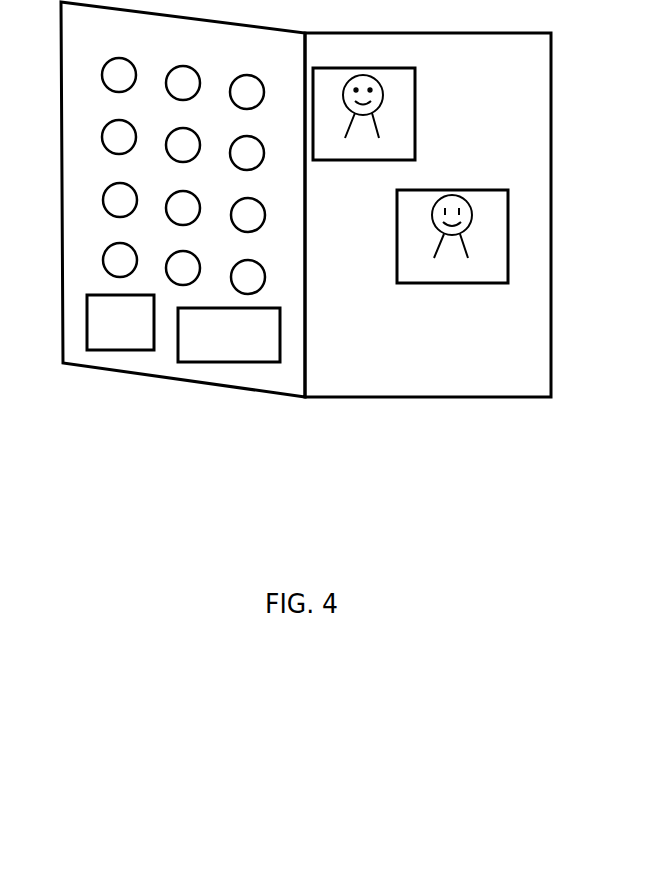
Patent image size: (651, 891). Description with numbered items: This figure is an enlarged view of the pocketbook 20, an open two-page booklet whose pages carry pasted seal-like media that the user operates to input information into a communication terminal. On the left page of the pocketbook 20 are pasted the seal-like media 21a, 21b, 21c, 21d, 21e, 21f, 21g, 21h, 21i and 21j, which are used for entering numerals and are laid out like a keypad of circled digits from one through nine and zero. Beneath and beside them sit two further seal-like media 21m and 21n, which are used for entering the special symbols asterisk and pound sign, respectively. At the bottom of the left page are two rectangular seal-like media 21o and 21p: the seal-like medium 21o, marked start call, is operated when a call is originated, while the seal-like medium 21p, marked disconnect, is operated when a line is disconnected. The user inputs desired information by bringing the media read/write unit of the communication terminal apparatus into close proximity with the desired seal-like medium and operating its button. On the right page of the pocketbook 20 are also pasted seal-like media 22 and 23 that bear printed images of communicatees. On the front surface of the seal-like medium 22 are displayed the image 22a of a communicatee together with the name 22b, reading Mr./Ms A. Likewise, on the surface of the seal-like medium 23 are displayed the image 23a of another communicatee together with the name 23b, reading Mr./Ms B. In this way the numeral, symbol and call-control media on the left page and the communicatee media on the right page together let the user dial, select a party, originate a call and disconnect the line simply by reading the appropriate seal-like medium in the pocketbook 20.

The pocketbook 20 is at (155, 413).
The seal-like medium for entering numerals 21a is at (131, 62).
The seal-like medium for entering numerals 21b is at (195, 70).
The seal-like medium for entering numerals 21c is at (259, 79).
The seal-like medium for entering numerals 21d is at (131, 124).
The seal-like medium for entering numerals 21e is at (202, 120).
The seal-like medium for entering numerals 21f is at (266, 128).
The seal-like medium for entering numerals 21g is at (132, 187).
The seal-like medium for entering numerals 21h is at (195, 195).
The seal-like medium for entering numerals 21i is at (267, 190).
The seal-like medium for entering numerals 21j is at (202, 243).
The seal-like medium for entering special symbol 21m is at (139, 235).
The seal-like medium for entering special symbol 21n is at (267, 252).
The seal-like medium for call origination 21o is at (110, 351).
The seal-like medium for line disconnection 21p is at (222, 363).
The seal-like medium 22 is at (355, 67).
The image of communicatee 22a is at (415, 97).
The name of communicatee 22b is at (415, 141).
The seal-like medium 23 is at (447, 187).
The image of communicatee 23a is at (506, 220).
The name of communicatee 23b is at (506, 266).